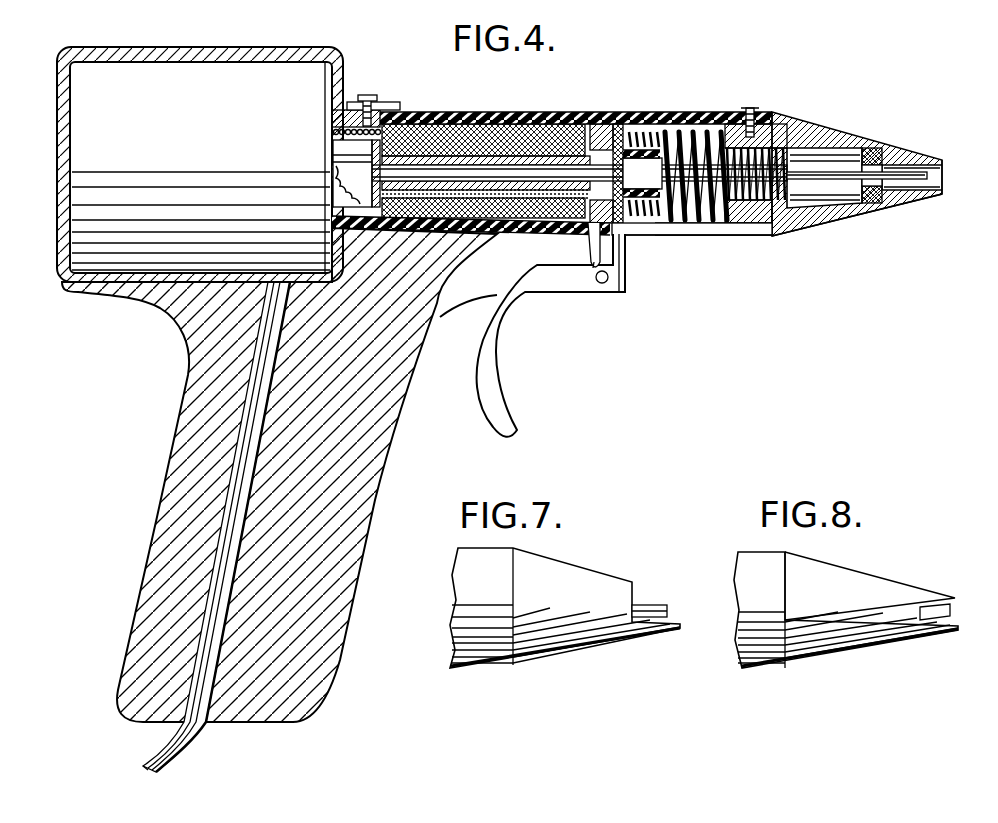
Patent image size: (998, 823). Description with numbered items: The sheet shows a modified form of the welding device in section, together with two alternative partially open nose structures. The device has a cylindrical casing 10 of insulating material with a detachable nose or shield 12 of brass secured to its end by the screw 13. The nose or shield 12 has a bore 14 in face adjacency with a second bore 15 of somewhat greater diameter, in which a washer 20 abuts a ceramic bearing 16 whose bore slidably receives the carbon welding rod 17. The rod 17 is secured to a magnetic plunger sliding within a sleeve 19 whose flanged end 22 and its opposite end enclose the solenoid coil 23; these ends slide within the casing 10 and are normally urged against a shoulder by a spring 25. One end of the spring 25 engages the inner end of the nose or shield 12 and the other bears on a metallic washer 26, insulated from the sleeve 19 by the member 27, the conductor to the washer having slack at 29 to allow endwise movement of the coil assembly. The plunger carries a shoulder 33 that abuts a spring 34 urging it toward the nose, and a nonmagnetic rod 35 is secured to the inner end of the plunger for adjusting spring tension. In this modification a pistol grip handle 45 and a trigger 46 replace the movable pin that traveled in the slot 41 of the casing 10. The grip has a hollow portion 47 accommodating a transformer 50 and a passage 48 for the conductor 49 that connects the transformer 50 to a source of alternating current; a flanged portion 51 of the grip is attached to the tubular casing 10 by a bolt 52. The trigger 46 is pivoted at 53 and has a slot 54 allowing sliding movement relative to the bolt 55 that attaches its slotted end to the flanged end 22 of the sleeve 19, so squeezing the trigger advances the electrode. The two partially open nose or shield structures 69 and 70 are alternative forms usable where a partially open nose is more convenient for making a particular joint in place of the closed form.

In FIG. 4, the cylindrical casing 10 is at (475, 112).
In FIG. 4, the nose or shield 12 is at (828, 132).
In FIG. 4, the screw 13 is at (750, 108).
In FIG. 4, the bore 14 is at (922, 196).
In FIG. 4, the second bore 15 is at (870, 206).
In FIG. 4, the bearing 16 is at (878, 160).
In FIG. 4, the carbon welding rod 17 is at (905, 170).
In FIG. 7, the carbon welding rod 17 is at (655, 605).
In FIG. 8, the carbon welding rod 17 is at (953, 612).
In FIG. 4, the sleeve 19 is at (527, 167).
In FIG. 4, the washer 20 is at (866, 150).
In FIG. 4, the flanged end 22 is at (596, 113).
In FIG. 4, the solenoid coil 23 is at (550, 124).
In FIG. 4, the spring 25 is at (705, 235).
In FIG. 4, the metallic washer 26 is at (622, 124).
In FIG. 4, the insulating member 27 is at (610, 112).
In FIG. 4, the slack 29 is at (334, 180).
In FIG. 4, the shoulder 33 is at (790, 140).
In FIG. 4, the spring 34 is at (780, 236).
In FIG. 4, the nonmagnetic rod 35 is at (482, 236).
In FIG. 4, the slot 41 is at (642, 235).
In FIG. 4, the pistol grip handle 45 is at (176, 318).
In FIG. 4, the trigger 46 is at (492, 343).
In FIG. 4, the hollow portion 47 is at (345, 152).
In FIG. 4, the passage 48 is at (245, 396).
In FIG. 4, the conductor 49 is at (188, 742).
In FIG. 4, the transformer 50 is at (75, 181).
In FIG. 4, the flanged portion 51 is at (385, 110).
In FIG. 4, the bolt 52 is at (368, 95).
In FIG. 4, the pivot 53 is at (608, 280).
In FIG. 4, the slot 54 is at (596, 240).
In FIG. 4, the bolt 55 is at (593, 258).
In FIG. 7, the nozzle 69 is at (578, 568).
In FIG. 8, the nozzle 70 is at (843, 575).